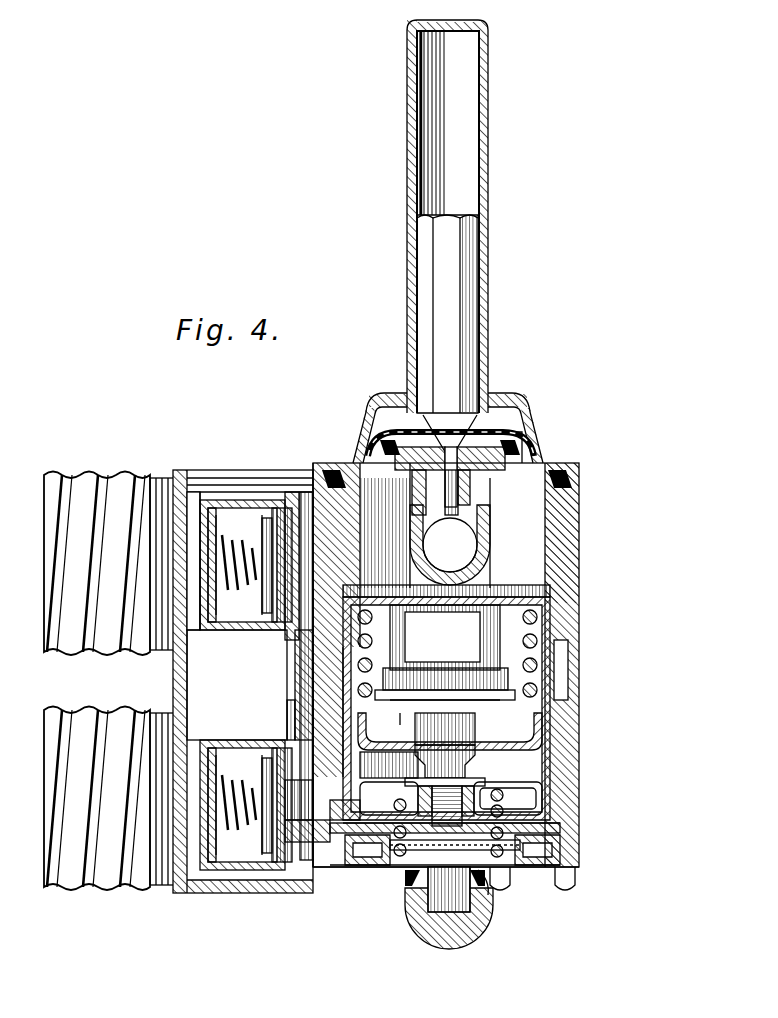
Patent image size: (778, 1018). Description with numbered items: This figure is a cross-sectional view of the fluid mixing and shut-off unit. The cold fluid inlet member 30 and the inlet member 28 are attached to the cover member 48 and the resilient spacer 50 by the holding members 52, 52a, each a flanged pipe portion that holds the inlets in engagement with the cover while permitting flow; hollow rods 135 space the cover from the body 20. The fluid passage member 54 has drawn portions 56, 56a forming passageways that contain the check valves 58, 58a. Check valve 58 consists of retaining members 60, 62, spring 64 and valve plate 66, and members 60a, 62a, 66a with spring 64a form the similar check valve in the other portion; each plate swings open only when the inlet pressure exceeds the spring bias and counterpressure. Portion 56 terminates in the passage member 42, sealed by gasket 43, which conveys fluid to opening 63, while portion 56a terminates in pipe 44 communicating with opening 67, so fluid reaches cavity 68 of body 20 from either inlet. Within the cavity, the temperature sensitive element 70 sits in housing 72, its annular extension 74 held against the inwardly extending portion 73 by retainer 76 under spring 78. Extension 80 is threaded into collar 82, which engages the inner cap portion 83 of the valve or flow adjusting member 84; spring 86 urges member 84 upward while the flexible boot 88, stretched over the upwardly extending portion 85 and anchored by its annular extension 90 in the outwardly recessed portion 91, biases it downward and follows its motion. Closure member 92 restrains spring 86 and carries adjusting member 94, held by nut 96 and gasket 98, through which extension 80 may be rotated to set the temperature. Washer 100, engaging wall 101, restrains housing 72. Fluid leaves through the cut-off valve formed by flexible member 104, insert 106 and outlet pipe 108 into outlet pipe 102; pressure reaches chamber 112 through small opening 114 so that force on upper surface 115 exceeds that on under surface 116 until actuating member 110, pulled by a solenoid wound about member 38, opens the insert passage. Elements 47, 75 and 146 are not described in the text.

The body 20 is at (330, 470).
The inlet member 28 is at (104, 888).
The cold fluid inlet member 30 is at (84, 472).
The solenoid member 38 is at (488, 183).
The passage member 42 is at (270, 685).
The gasket 43 is at (316, 470).
The pipe 44 is at (320, 850).
The seal 47 is at (360, 850).
The cover member 48 is at (176, 472).
The resilient spacer 50 is at (194, 480).
The holding member 52 is at (214, 500).
The holding member 52a is at (214, 870).
The fluid passage member 54 is at (200, 688).
The drawn portion 56 is at (236, 500).
The drawn portion 56a is at (240, 870).
The check valve 58 is at (239, 551).
The check valve 58a is at (240, 813).
The retaining member 60 is at (256, 500).
The retaining member 60a is at (266, 870).
The retaining member 62 is at (288, 490).
The retaining member 62a is at (290, 870).
The opening 63 is at (565, 650).
The spring 64 is at (250, 600).
The spring 64a is at (254, 770).
The valve plate 66 is at (224, 600).
The valve plate 66a is at (222, 770).
The opening 67 is at (570, 832).
The cavity 68 is at (552, 465).
The temperature sensitive element 70 is at (565, 605).
The housing 72 is at (540, 680).
The inwardly extending portion 73 is at (520, 705).
The annular extension 74 is at (490, 745).
The washer 75 is at (520, 690).
The retainer 76 is at (520, 748).
The spring 78 is at (545, 630).
The extension 80 is at (550, 790).
The collar 82 is at (560, 815).
The inner cap portion 83 is at (462, 803).
The valve or flow adjusting member 84 is at (560, 805).
The upwardly extending portion 85 is at (530, 760).
The spring 86 is at (452, 845).
The flexible boot 88 is at (520, 735).
The annular extension 90 is at (548, 785).
The outwardly recessed portion 91 is at (545, 772).
The closure member 92 is at (512, 880).
The adjusting member 94 is at (492, 893).
The nut 96 is at (420, 928).
The gasket 98 is at (402, 890).
The washer 100 is at (555, 580).
The wall 101 is at (520, 563).
The outlet pipe 102 is at (500, 545).
The flexible member 104 is at (542, 422).
The insert 106 is at (470, 500).
The outlet pipe 108 is at (450, 545).
The actuating member 110 is at (455, 330).
The chamber 112 is at (510, 418).
The small opening 114 is at (392, 428).
The upper surface 115 is at (486, 430).
The under surface 116 is at (436, 473).
The hollow rods 135 is at (306, 480).
The seal 146 is at (577, 885).